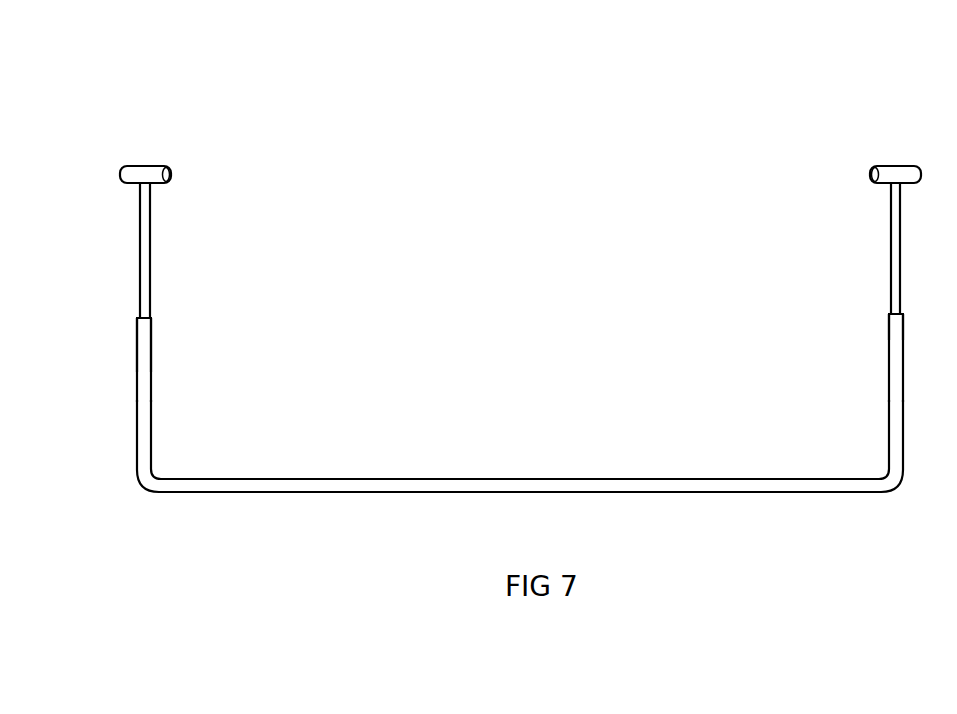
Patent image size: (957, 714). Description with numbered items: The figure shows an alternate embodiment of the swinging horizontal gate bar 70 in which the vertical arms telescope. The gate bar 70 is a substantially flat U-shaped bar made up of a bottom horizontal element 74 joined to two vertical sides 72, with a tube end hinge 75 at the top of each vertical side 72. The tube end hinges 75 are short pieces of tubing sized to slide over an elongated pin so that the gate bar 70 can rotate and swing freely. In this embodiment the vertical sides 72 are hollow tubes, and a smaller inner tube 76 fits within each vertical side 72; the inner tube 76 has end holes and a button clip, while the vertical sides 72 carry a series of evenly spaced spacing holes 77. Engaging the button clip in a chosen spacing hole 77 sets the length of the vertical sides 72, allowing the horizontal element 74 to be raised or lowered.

The swinging horizontal gate bar 70 is at (520, 268).
The vertical sides 72 is at (150, 443).
The bottom horizontal element 74 is at (472, 484).
The tube end hinge 75 is at (147, 175).
The inner tube 76 is at (148, 241).
The spacing holes 77 is at (150, 366).